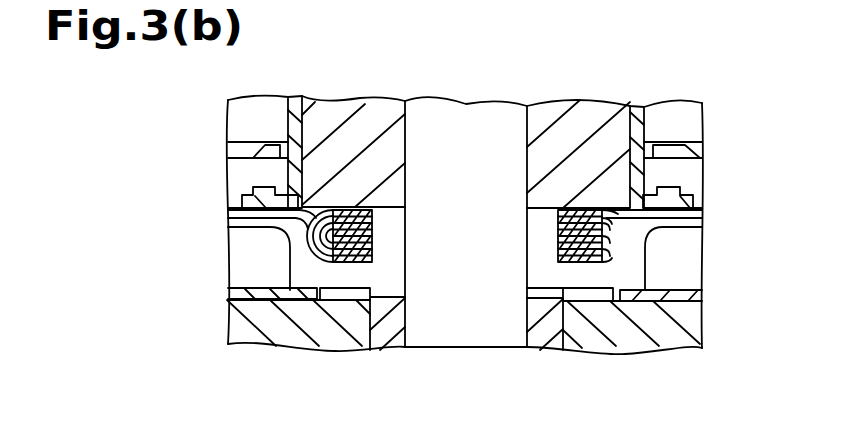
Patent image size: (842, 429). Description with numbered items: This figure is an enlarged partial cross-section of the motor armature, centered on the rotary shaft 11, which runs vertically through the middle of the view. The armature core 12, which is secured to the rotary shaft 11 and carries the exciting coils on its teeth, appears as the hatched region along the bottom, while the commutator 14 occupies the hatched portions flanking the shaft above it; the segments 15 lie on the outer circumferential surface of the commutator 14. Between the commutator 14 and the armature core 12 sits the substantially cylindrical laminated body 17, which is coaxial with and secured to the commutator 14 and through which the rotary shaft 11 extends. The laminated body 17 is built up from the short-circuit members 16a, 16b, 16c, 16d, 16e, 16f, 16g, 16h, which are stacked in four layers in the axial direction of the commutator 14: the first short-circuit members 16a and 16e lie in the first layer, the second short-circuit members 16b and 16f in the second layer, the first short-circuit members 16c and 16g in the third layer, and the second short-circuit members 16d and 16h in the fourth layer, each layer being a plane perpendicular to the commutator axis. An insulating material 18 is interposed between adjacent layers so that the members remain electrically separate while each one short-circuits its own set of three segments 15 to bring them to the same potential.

The rotary shaft 11 is at (473, 108).
The armature core 12 is at (338, 346).
The commutator 14 is at (604, 107).
The segments 15 is at (286, 119).
The first short-circuit member 16a is at (558, 255).
The second short-circuit member 16b is at (558, 241).
The first short-circuit member 16c is at (558, 228).
The second short-circuit member 16d is at (558, 214).
The first short-circuit member 16e is at (421, 267).
The second short-circuit member 16f is at (421, 244).
The first short-circuit member 16g is at (421, 219).
The second short-circuit member 16h is at (421, 199).
The laminated body 17 is at (608, 232).
The insulating material 18 is at (300, 241).